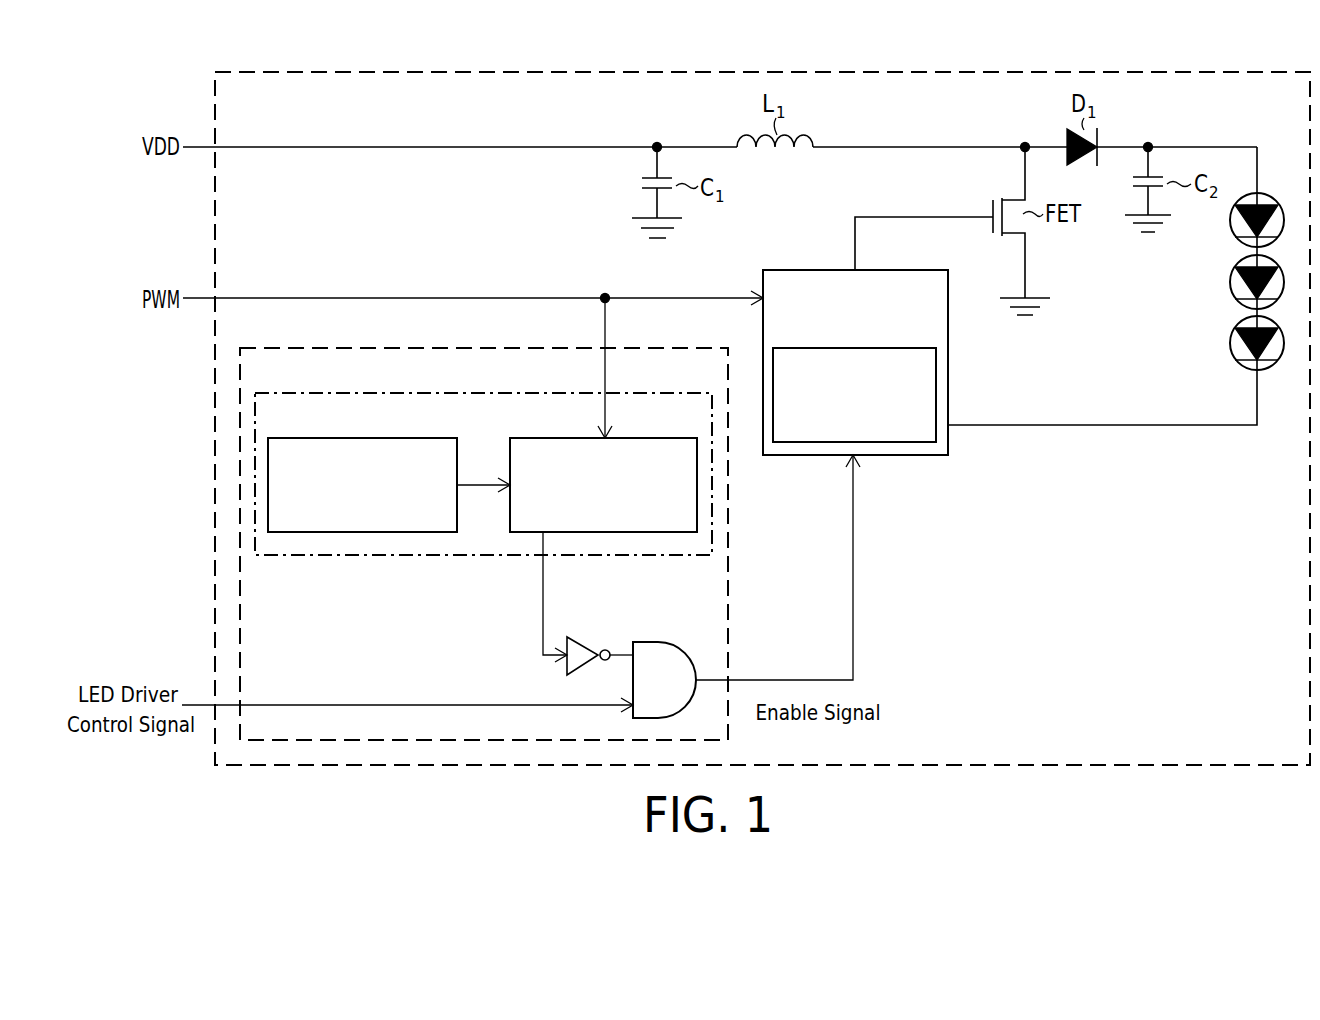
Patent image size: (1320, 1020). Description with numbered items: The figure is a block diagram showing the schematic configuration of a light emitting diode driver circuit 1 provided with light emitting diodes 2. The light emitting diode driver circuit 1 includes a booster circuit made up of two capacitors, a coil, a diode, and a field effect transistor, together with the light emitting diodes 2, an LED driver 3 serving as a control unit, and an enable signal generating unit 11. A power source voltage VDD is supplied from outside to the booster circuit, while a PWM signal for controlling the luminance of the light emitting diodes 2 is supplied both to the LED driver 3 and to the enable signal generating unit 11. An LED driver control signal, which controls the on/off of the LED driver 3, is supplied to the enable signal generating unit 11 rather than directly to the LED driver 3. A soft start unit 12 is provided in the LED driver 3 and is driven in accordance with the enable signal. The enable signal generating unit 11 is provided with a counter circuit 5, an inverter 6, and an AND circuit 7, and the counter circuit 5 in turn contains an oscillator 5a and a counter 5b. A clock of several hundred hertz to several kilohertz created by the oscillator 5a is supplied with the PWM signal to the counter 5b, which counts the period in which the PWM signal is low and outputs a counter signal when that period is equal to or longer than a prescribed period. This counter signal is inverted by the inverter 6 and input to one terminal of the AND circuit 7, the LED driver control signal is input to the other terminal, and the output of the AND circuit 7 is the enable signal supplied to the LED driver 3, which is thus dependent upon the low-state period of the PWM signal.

The light emitting diode driver circuit 1 is at (1290, 72).
The light emitting diodes 2 is at (1281, 195).
The LED driver 3 is at (928, 270).
The counter circuit 5 is at (688, 393).
The oscillator 5a is at (415, 438).
The counter 5b is at (657, 438).
The inverter 6 is at (583, 637).
The AND circuit 7 is at (685, 645).
The enable signal generating unit 11 is at (690, 348).
The soft start unit 12 is at (895, 348).